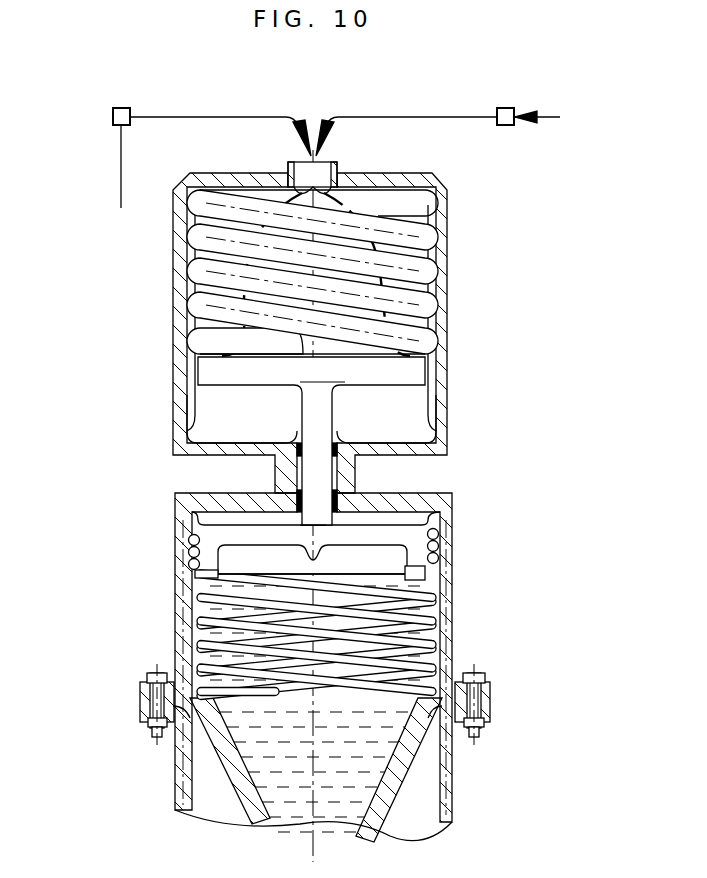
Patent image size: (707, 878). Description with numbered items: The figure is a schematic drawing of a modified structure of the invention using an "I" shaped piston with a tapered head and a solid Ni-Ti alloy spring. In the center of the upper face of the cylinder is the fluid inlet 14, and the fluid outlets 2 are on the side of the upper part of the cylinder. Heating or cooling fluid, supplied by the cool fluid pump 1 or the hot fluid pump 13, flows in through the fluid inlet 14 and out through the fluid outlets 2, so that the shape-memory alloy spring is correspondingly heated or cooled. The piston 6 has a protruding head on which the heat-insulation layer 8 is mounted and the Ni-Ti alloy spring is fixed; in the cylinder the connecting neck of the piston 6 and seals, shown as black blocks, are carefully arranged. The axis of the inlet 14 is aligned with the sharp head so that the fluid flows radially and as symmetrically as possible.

The cool fluid pump 1 is at (508, 120).
The outlet 2 is at (182, 430).
The piston 6 is at (320, 418).
The heat-insulation layer 8 is at (440, 405).
The hot fluid pump 13 is at (121, 122).
The inlet 14 is at (318, 186).